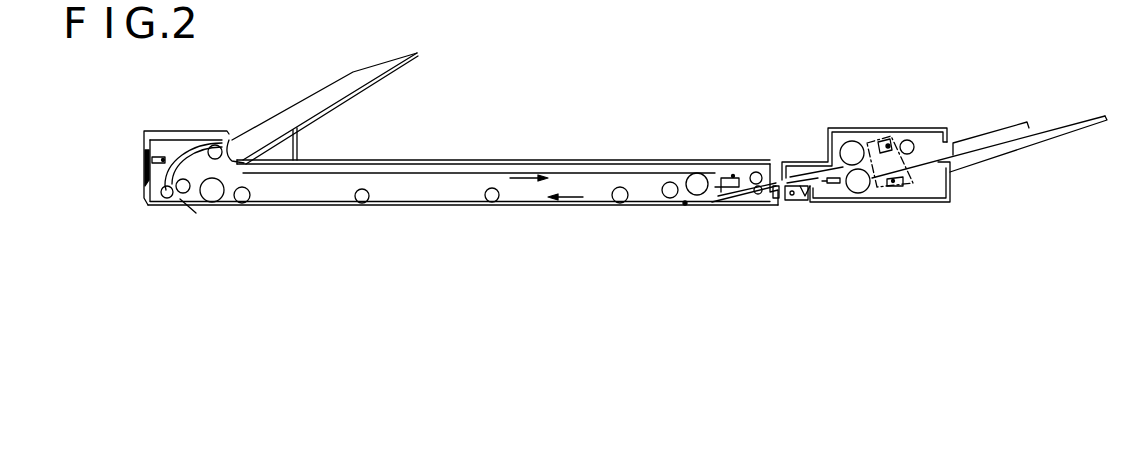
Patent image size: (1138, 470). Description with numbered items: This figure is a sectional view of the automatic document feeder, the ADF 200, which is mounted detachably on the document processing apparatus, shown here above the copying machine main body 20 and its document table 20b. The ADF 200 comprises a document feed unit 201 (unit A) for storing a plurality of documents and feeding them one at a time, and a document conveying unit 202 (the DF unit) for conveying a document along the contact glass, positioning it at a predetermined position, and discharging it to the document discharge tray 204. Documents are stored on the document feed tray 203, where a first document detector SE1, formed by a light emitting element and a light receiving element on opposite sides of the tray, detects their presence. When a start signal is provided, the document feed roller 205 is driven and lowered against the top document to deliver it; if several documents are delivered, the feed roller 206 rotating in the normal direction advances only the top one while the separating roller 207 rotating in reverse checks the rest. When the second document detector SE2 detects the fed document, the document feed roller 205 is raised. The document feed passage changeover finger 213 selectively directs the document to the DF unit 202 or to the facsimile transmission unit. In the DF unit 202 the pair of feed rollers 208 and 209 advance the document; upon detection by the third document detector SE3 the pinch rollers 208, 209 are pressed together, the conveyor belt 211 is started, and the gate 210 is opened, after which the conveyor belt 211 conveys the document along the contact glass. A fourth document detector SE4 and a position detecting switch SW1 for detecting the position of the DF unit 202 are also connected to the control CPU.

The copying machine main body 20 is at (330, 0).
The document table 20b is at (392, 0).
The automatic document feeder 200 is at (461, 140).
The document feed unit 201 is at (877, 127).
The document conveying unit 202 is at (517, 158).
The document feed tray 203 is at (1067, 130).
The document discharge tray 204 is at (321, 112).
The document feed roller 205 is at (913, 141).
The feed roller 206 is at (851, 141).
The separating roller 207 is at (862, 193).
The feed roller 208 is at (756, 171).
The feed roller 209 is at (759, 194).
The gate 210 is at (732, 180).
The conveyor belt 211 is at (437, 173).
The document feed passage changeover finger 213 is at (809, 200).
The first document detector SE1 is at (890, 144).
The second document detector SE2 is at (834, 191).
The third document detector SE3 is at (737, 177).
The fourth document detector SE4 is at (173, 143).
The position detecting switch SW1 is at (685, 206).